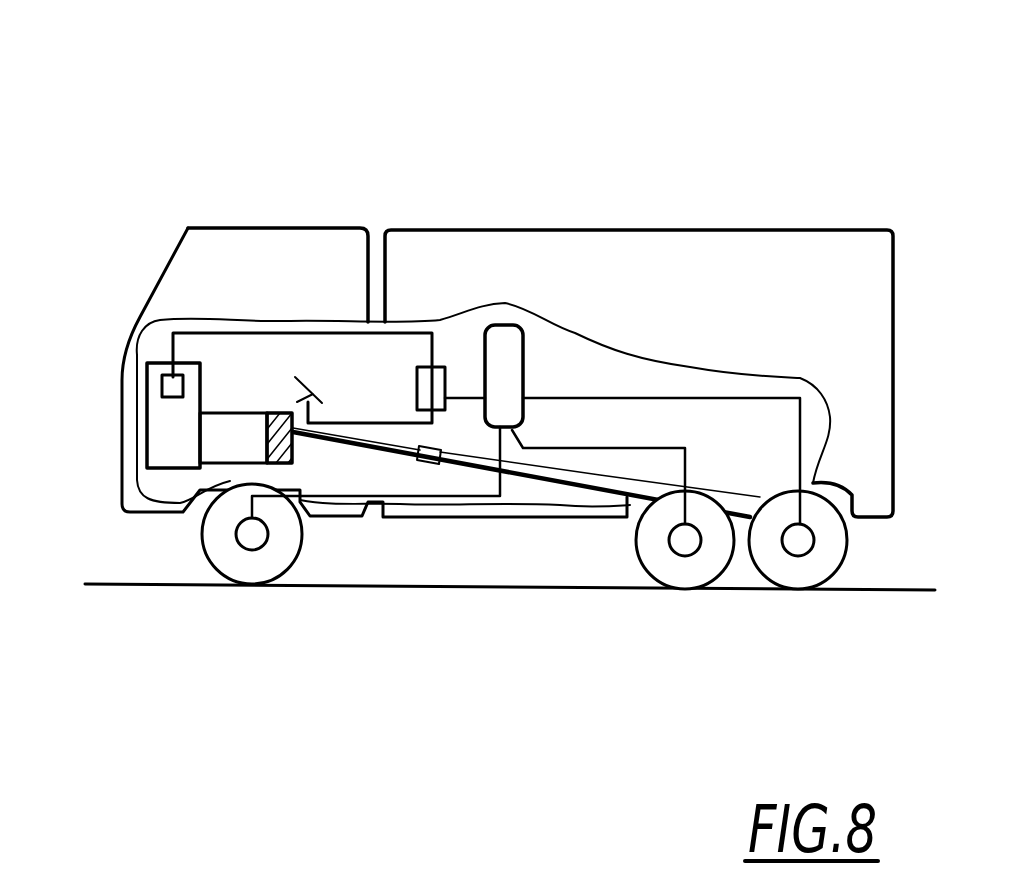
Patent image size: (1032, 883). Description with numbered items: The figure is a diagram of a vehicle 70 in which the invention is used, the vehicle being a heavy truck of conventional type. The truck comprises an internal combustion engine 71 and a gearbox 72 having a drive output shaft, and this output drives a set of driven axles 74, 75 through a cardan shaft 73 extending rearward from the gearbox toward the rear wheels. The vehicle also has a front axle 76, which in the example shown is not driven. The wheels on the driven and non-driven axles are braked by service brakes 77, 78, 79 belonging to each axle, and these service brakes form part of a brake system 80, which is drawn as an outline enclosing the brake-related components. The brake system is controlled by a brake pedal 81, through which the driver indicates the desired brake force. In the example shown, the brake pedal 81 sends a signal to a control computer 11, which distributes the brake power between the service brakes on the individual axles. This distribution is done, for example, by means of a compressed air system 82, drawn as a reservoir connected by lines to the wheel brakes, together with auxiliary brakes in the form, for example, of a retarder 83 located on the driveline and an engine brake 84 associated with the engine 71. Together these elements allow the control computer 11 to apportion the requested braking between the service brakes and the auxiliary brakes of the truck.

The vehicle 70 is at (337, 207).
The internal combustion engine 71 is at (162, 415).
The gearbox 72 is at (242, 422).
The cardan shaft 73 is at (537, 473).
The driven axle 74 is at (663, 548).
The driven axle 75 is at (790, 560).
The front axle 76 is at (237, 547).
The service brake 77 is at (252, 538).
The service brake 78 is at (695, 548).
The service brake 79 is at (803, 542).
The brake system 80 is at (535, 353).
The brake pedal 81 is at (317, 368).
The compressed air system 82 is at (499, 335).
The retarder 83 is at (268, 462).
The engine brake 84 is at (167, 385).
The control computer 11 is at (432, 373).